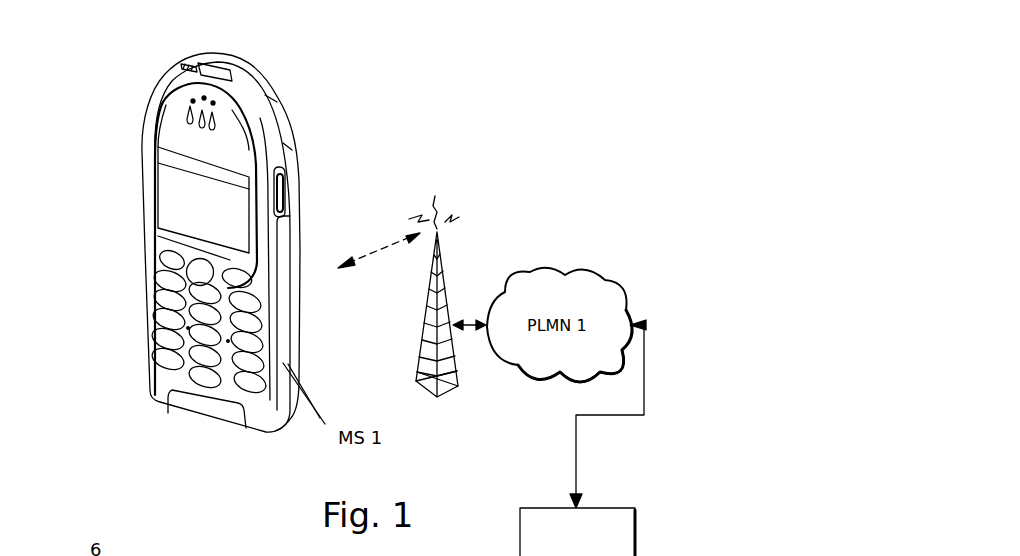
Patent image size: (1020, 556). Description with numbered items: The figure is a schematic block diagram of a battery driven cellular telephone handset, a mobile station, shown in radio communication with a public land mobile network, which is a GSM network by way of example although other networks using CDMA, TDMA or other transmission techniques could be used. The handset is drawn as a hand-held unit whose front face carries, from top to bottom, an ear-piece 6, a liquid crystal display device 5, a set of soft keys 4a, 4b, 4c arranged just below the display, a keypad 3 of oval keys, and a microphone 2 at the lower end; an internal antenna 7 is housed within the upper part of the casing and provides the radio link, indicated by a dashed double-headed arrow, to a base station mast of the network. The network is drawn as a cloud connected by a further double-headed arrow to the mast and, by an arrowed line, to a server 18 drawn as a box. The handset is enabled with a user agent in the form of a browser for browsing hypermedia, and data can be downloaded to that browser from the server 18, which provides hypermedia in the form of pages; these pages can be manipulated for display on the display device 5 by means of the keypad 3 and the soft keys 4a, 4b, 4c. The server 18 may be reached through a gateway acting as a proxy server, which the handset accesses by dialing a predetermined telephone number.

The microphone 2 is at (208, 416).
The keypad 3 is at (152, 331).
The soft key 4a is at (168, 256).
The soft key 4b is at (227, 280).
The soft key 4c is at (158, 283).
The liquid crystal display device 5 is at (173, 200).
The ear-piece 6 is at (191, 100).
The internal antenna 7 is at (280, 112).
The server 18 is at (635, 538).